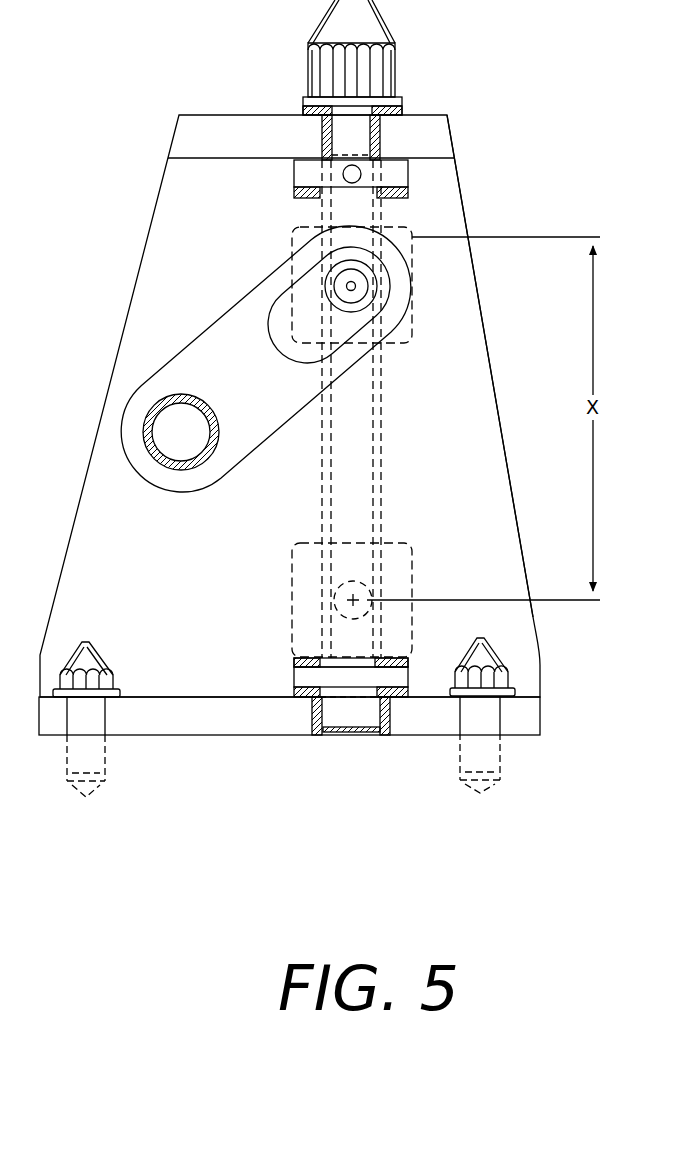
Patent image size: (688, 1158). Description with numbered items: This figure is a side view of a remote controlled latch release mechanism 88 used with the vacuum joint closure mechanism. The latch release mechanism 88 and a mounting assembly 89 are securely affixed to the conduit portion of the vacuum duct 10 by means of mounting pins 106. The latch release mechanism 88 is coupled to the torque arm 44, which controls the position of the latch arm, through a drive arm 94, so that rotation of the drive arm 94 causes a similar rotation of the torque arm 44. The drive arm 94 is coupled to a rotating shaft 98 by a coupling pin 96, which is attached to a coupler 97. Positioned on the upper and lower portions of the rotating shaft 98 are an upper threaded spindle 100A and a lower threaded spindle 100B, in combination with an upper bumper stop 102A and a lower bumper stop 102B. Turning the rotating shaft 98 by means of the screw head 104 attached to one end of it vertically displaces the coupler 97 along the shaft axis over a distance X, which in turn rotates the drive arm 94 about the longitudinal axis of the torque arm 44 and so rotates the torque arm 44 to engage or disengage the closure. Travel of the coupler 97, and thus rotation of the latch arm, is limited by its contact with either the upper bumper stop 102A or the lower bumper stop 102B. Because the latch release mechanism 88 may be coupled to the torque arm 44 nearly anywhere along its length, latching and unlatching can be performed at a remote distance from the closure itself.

The latch release mechanism 88 is at (131, 165).
The mounting assembly 89 is at (470, 358).
The screw head 104 is at (388, 56).
The upper threaded spindle 100A is at (400, 168).
The upper bumper stop 102A is at (405, 192).
The rotating shaft 98 is at (377, 449).
The coupler 97 is at (400, 323).
The drive arm 94 is at (224, 340).
The coupling pin 96 is at (362, 280).
The torque arm 44 is at (173, 447).
The lower bumper stop 102B is at (293, 660).
The lower threaded spindle 100B is at (293, 672).
The vacuum duct 10 is at (288, 742).
The mounting pins 106 is at (105, 777).